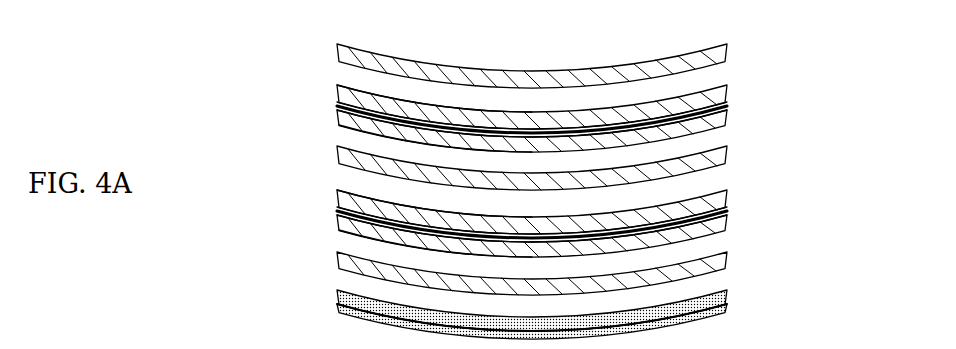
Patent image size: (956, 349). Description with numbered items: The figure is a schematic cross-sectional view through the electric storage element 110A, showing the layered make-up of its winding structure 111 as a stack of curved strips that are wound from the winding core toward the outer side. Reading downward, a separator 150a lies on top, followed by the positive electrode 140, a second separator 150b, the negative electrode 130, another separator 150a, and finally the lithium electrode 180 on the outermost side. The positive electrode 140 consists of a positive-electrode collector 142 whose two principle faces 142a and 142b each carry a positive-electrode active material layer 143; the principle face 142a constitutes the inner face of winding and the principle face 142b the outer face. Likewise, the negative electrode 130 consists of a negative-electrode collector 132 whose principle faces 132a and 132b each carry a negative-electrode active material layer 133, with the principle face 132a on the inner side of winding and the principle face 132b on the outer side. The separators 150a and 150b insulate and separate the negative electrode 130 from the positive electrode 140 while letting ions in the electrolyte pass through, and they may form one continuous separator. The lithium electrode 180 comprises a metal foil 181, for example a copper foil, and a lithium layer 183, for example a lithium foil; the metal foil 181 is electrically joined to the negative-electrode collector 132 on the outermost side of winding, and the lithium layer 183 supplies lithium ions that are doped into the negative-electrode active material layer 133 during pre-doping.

The electric storage element 110A is at (550, 50).
The winding structure 111 is at (262, 40).
The separator 150a is at (337, 53).
The separator 150b is at (337, 155).
The positive electrode 140 is at (783, 50).
The positive-electrode active material layer 143 is at (737, 88).
The positive-electrode collector 142 is at (738, 104).
The principle face of positive-electrode collector 142a is at (344, 89).
The principle face of positive-electrode collector 142b is at (346, 122).
The negative electrode 130 is at (785, 158).
The negative-electrode active material layer 133 is at (752, 178).
The negative-electrode collector 132 is at (738, 210).
The principle face of negative-electrode collector 132a is at (344, 194).
The principle face of negative-electrode collector 132b is at (346, 227).
The lithium electrode 180 is at (267, 335).
The lithium layer 183 is at (337, 296).
The metal foil 181 is at (337, 307).